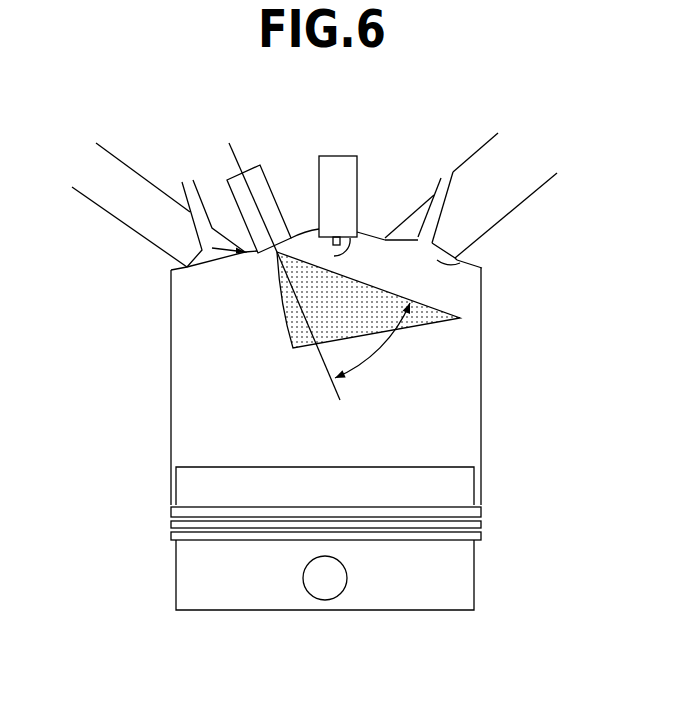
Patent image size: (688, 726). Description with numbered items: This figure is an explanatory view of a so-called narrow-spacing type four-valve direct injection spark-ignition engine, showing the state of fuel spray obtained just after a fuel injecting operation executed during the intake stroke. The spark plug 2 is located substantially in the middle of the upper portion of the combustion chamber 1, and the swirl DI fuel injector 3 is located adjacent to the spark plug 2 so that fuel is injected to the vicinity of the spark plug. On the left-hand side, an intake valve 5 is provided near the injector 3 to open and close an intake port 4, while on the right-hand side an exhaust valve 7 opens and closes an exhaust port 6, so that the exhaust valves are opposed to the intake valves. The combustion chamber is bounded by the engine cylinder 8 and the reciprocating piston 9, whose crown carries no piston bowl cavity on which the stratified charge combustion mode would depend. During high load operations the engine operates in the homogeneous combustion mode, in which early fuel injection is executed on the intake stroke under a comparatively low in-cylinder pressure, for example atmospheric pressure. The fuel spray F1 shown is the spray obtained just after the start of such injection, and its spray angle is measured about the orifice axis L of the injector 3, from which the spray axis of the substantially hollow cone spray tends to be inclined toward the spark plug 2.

The combustion chamber 1 is at (460, 368).
The spark plug 2 is at (345, 170).
The swirl DI fuel injector 3 is at (260, 177).
The intake port 4 is at (148, 223).
The intake valve 5 is at (212, 258).
The exhaust port 6 is at (498, 198).
The exhaust valve 7 is at (460, 263).
The engine cylinder 8 is at (180, 383).
The reciprocating piston 9 is at (193, 567).
The fuel spray F1 is at (313, 305).
The orifice axis L is at (330, 390).